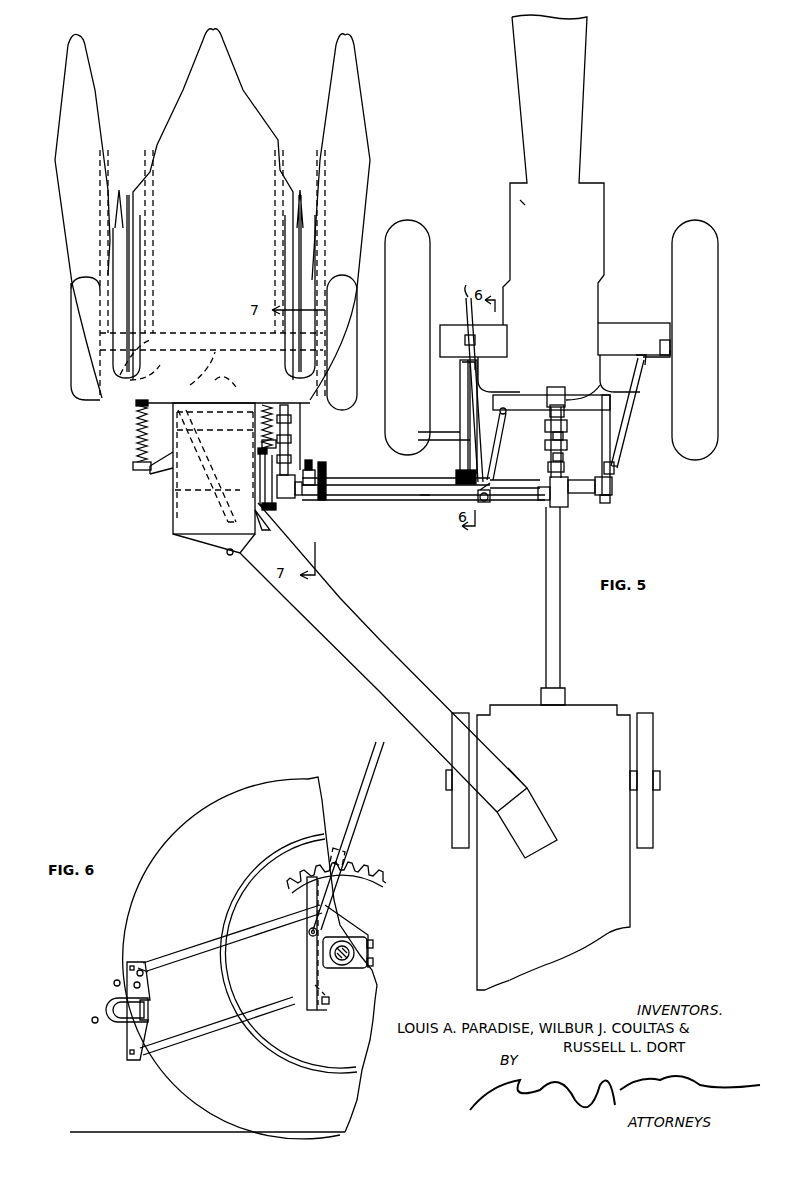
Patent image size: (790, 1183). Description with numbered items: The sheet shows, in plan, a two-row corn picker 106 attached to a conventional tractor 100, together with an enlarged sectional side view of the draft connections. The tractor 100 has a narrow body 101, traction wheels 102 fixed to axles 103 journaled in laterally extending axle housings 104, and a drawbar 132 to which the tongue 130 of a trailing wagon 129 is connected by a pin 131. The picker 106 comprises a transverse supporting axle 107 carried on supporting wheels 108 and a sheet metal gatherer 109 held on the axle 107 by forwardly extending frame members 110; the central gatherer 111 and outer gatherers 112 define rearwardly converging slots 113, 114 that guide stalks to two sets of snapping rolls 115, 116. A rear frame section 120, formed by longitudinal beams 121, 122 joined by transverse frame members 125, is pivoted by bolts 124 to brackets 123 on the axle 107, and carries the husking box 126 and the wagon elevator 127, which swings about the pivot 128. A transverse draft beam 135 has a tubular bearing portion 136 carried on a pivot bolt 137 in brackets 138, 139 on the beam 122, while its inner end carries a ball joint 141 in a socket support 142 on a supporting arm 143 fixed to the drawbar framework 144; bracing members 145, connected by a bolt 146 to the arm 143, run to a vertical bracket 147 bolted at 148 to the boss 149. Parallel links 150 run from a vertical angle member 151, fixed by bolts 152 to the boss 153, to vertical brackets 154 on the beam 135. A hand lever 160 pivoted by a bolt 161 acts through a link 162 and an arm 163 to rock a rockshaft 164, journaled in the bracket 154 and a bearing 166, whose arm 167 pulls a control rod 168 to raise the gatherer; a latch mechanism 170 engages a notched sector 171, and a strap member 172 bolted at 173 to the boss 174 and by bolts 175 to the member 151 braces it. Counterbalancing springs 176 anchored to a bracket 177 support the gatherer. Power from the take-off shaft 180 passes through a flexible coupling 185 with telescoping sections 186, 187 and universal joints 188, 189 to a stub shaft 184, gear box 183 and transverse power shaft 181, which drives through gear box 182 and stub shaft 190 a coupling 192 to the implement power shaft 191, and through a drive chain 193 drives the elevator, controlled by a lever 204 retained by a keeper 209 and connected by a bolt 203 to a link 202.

In FIG. 5, the tractor 100 is at (597, 130).
In FIG. 5, the tractor body 101 is at (568, 80).
In FIG. 5, the traction wheels 102 is at (413, 233).
In FIG. 6, the traction wheels 102 is at (255, 808).
In FIG. 5, the axles 103 is at (436, 340).
In FIG. 6, the axles 103 is at (354, 953).
In FIG. 5, the axle housings 104 is at (492, 360).
In FIG. 6, the axle housings 104 is at (362, 937).
In FIG. 5, the corn picker 106 is at (386, 117).
In FIG. 5, the transverse supporting axle 107 is at (180, 333).
In FIG. 5, the supporting wheels 108 is at (71, 345).
In FIG. 5, the sheet metal gatherer 109 is at (382, 186).
In FIG. 5, the frame members 110 is at (100, 190).
In FIG. 5, the central gatherer 111 is at (218, 62).
In FIG. 5, the outer gatherers 112 is at (82, 60).
In FIG. 5, the slot 113 is at (148, 46).
In FIG. 5, the slot 114 is at (290, 46).
In FIG. 5, the snapping rolls 115 is at (130, 255).
In FIG. 5, the snapping rolls 116 is at (298, 230).
In FIG. 5, the rear frame section 120 is at (133, 397).
In FIG. 5, the beam 121 is at (136, 405).
In FIG. 5, the beam 122 is at (232, 428).
In FIG. 5, the brackets 123 is at (162, 363).
In FIG. 5, the pivot bolts 124 is at (165, 335).
In FIG. 5, the transverse frame members 125 is at (212, 412).
In FIG. 5, the husking box 126 is at (185, 500).
In FIG. 5, the wagon elevator 127 is at (350, 628).
In FIG. 5, the pivot 128 is at (228, 556).
In FIG. 5, the wagon 129 is at (553, 847).
In FIG. 5, the tongue 130 is at (555, 624).
In FIG. 5, the pin 131 is at (545, 445).
In FIG. 5, the drawbar 132 is at (545, 426).
In FIG. 5, the draft beam 135 is at (430, 460).
In FIG. 6, the draft beam 135 is at (107, 1000).
In FIG. 5, the tubular bearing portion 136 is at (258, 463).
In FIG. 5, the pivot bolt 137 is at (265, 532).
In FIG. 5, the bracket 138 is at (262, 444).
In FIG. 5, the bracket 139 is at (272, 510).
In FIG. 5, the ball joint 141 is at (612, 483).
In FIG. 5, the socket support 142 is at (606, 503).
In FIG. 5, the supporting arm 143 is at (621, 436).
In FIG. 5, the drawbar supporting framework 144 is at (605, 395).
In FIG. 5, the bracing members 145 is at (626, 413).
In FIG. 5, the bolt 146 is at (614, 468).
In FIG. 5, the vertical bracket 147 is at (641, 372).
In FIG. 5, the bolt 148 is at (668, 358).
In FIG. 5, the implement supporting boss 149 is at (665, 345).
In FIG. 5, the links 150 is at (460, 403).
In FIG. 6, the links 150 is at (190, 960).
In FIG. 5, the vertical angle member 151 is at (460, 364).
In FIG. 6, the vertical angle member 151 is at (307, 888).
In FIG. 5, the bolts 152 is at (460, 370).
In FIG. 6, the bolts 152 is at (308, 963).
In FIG. 6, the implement supporting boss 153 is at (330, 1001).
In FIG. 5, the vertical brackets 154 is at (480, 495).
In FIG. 6, the vertical brackets 154 is at (150, 980).
In FIG. 5, the hand lever 160 is at (463, 297).
In FIG. 6, the hand lever 160 is at (358, 796).
In FIG. 6, the bolt 161 is at (308, 936).
In FIG. 5, the link 162 is at (470, 425).
In FIG. 6, the link 162 is at (145, 945).
In FIG. 5, the arm 163 is at (458, 472).
In FIG. 6, the arm 163 is at (138, 965).
In FIG. 5, the rockshaft 164 is at (392, 498).
In FIG. 6, the rockshaft 164 is at (122, 968).
In FIG. 5, the bearing 166 is at (312, 472).
In FIG. 5, the arm 167 is at (308, 460).
In FIG. 5, the control rod 168 is at (300, 420).
In FIG. 5, the latch mechanism 170 is at (475, 340).
In FIG. 6, the latch mechanism 170 is at (346, 854).
In FIG. 6, the notched sector 171 is at (345, 868).
In FIG. 6, the strap member 172 is at (358, 912).
In FIG. 6, the bolt 173 is at (375, 942).
In FIG. 6, the implement supporting boss 174 is at (373, 962).
In FIG. 6, the bolts 175 is at (328, 1010).
In FIG. 5, the counterbalancing springs 176 is at (135, 438).
In FIG. 5, the bracket 177 is at (150, 472).
In FIG. 5, the power take-off shaft 180 is at (556, 387).
In FIG. 5, the power shaft 181 is at (486, 503).
In FIG. 6, the power shaft 181 is at (113, 980).
In FIG. 5, the gear box 182 is at (295, 495).
In FIG. 5, the gear box 183 is at (568, 498).
In FIG. 5, the stub shaft 184 is at (565, 468).
In FIG. 5, the flexible coupling 185 is at (563, 445).
In FIG. 5, the shaft section 186 is at (553, 458).
In FIG. 5, the shaft section 187 is at (590, 400).
In FIG. 5, the universal joint 188 is at (515, 488).
In FIG. 5, the universal joint 189 is at (548, 395).
In FIG. 5, the stub shaft 190 is at (258, 478).
In FIG. 5, the power shaft 191 is at (271, 414).
In FIG. 5, the flexible coupling 192 is at (295, 429).
In FIG. 5, the drive chain 193 is at (327, 475).
In FIG. 5, the link 202 is at (415, 505).
In FIG. 6, the link 202 is at (95, 1025).
In FIG. 5, the bolt 203 is at (484, 515).
In FIG. 5, the lever 204 is at (431, 425).
In FIG. 5, the keeper 209 is at (495, 490).